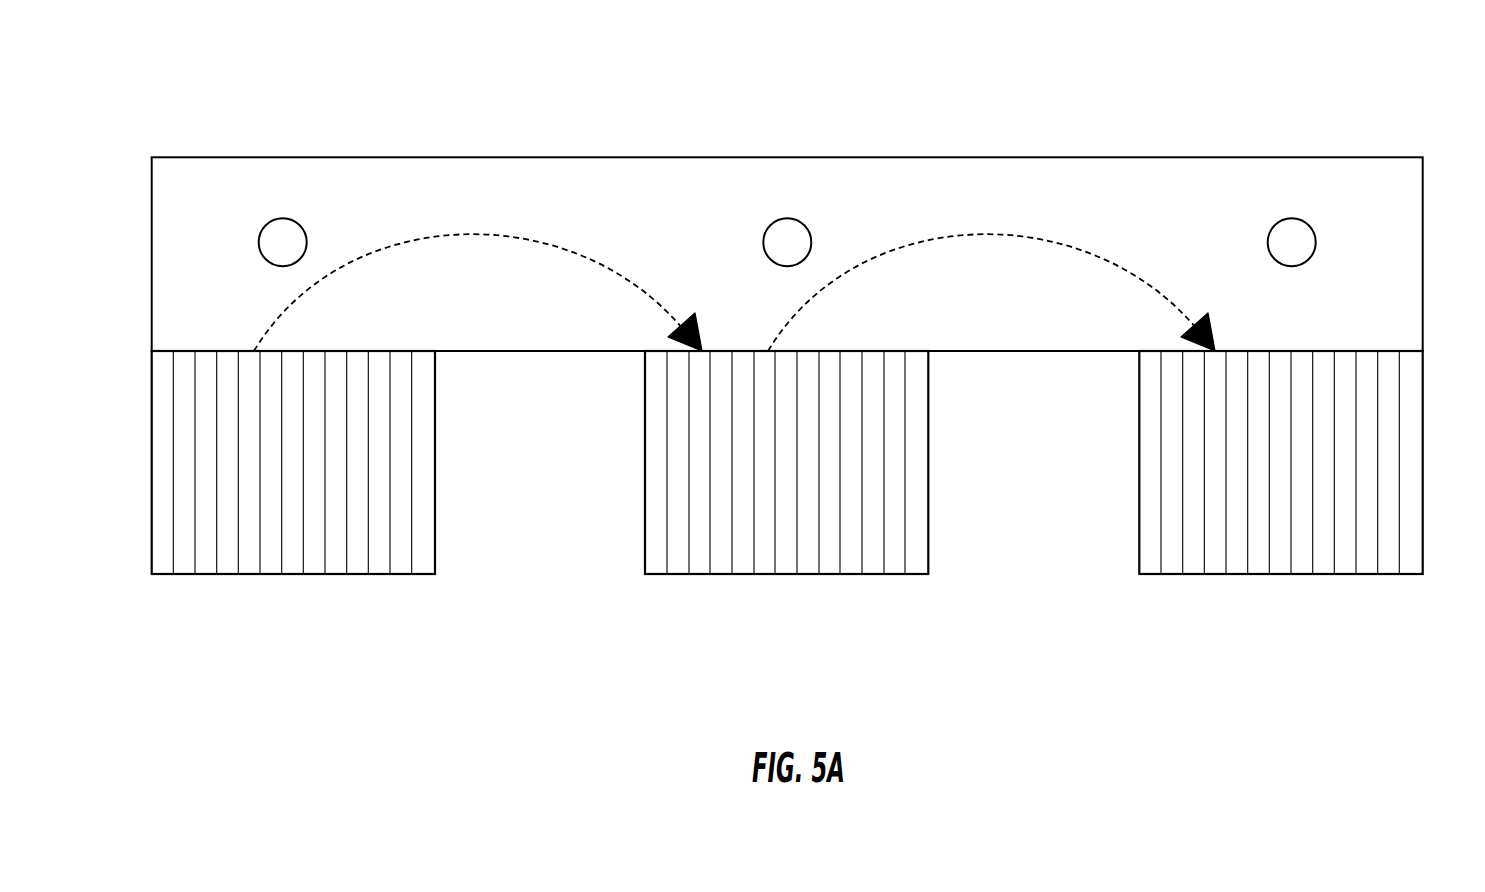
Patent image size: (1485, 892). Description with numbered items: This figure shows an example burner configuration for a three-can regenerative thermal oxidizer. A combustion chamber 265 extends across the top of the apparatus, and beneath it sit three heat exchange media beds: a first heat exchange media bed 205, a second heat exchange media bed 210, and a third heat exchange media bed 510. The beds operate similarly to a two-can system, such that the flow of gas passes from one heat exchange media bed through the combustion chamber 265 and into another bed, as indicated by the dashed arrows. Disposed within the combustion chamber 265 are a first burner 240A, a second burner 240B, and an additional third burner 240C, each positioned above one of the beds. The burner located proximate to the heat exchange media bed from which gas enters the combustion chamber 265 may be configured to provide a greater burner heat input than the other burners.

The combustion chamber 265 is at (202, 232).
The first burner 240A is at (283, 218).
The second burner 240B is at (788, 218).
The third burner 240C is at (1292, 218).
The first heat exchange media bed 205 is at (193, 400).
The second heat exchange media bed 210 is at (916, 395).
The third heat exchange media bed 510 is at (1392, 487).